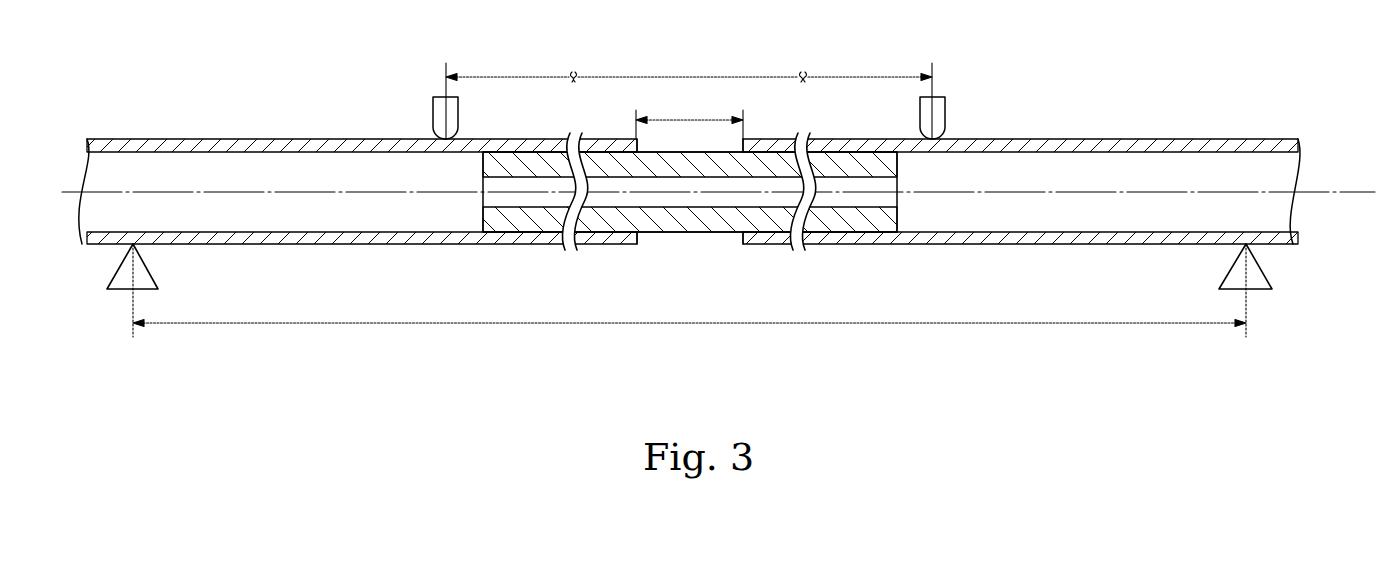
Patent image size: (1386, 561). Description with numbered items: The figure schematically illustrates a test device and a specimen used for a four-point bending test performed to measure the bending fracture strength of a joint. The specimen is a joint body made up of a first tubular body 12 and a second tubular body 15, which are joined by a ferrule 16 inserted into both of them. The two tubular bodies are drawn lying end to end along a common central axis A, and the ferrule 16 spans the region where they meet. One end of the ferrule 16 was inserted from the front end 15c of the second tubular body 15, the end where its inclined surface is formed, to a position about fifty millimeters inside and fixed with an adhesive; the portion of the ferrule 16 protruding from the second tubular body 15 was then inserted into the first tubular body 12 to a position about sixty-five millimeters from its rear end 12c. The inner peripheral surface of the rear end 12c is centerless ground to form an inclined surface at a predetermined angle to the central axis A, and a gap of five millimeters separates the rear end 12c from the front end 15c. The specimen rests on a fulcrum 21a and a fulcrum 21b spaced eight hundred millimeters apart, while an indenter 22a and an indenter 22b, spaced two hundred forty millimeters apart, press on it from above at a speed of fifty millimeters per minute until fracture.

The first tubular body 12 is at (290, 138).
The second tubular body 15 is at (1090, 139).
The ferrule 16 is at (695, 233).
The rear end 12c is at (638, 238).
The front end 15c is at (735, 238).
The indenter 22a is at (442, 100).
The indenter 22b is at (938, 100).
The fulcrum 21a is at (120, 285).
The fulcrum 21b is at (1258, 283).
The central axis A is at (1340, 192).